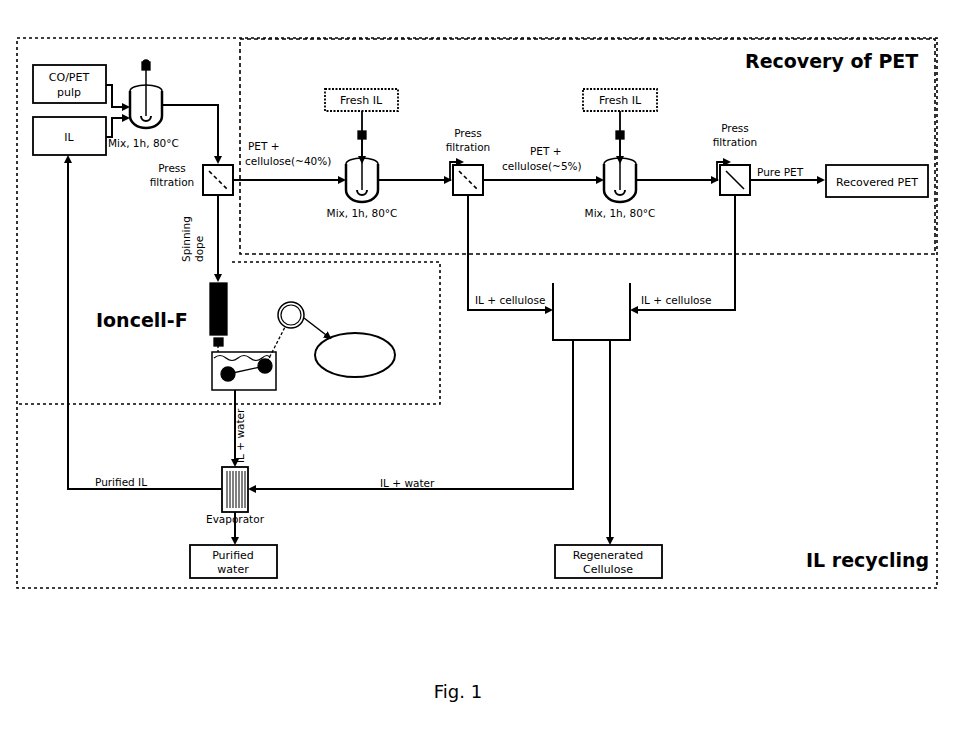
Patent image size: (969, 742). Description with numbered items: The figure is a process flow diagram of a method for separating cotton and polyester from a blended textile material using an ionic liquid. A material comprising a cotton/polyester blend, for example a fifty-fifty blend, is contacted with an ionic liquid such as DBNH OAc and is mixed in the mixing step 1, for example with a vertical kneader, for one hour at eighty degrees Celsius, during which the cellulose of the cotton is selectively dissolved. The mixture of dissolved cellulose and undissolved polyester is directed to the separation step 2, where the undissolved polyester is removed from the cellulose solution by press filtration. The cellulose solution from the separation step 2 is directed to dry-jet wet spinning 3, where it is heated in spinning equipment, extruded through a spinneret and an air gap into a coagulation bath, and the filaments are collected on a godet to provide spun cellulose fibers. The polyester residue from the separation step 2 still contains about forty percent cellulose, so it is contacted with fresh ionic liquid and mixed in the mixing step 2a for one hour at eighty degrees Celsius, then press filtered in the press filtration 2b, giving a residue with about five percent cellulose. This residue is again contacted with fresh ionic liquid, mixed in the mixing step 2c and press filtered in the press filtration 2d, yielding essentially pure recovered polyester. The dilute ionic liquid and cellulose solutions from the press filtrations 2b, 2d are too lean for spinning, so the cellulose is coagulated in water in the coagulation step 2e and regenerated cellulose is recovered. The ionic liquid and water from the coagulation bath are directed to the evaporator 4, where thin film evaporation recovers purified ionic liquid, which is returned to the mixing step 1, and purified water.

The mixing step 1 is at (153, 94).
The separation step 2 is at (218, 170).
The mixing step 2a is at (374, 166).
The press filtration 2b is at (478, 180).
The mixing step 2c is at (631, 166).
The press filtration 2d is at (745, 180).
The coagulation bath in water 2e is at (605, 311).
The dry-jet wet spinning 3 is at (297, 336).
The evaporator 4 is at (227, 489).